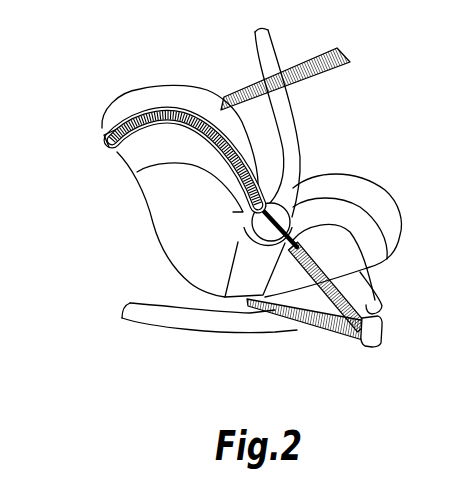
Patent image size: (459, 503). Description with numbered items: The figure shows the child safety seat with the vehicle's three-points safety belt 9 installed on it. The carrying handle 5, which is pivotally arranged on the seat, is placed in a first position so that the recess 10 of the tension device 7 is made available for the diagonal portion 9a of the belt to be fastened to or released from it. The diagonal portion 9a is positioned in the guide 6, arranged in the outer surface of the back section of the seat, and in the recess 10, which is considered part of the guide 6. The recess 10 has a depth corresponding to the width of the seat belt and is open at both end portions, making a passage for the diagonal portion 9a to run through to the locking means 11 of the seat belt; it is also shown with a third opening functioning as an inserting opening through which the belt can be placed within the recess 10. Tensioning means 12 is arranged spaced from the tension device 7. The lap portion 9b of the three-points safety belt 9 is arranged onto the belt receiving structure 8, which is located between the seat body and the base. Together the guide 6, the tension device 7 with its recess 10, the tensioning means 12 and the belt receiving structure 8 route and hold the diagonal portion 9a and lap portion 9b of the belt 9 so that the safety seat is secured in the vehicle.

The carrying handle 5 is at (293, 118).
The guide 6 is at (140, 118).
The tension device 7 is at (287, 222).
The belt receiving structure 8 is at (247, 314).
The three-points safety belt 9 is at (228, 71).
The diagonal portion 9a is at (106, 138).
The lap portion 9b is at (310, 318).
The recess 10 is at (257, 213).
The locking means 11 is at (382, 333).
The tensioning means 12 is at (240, 242).